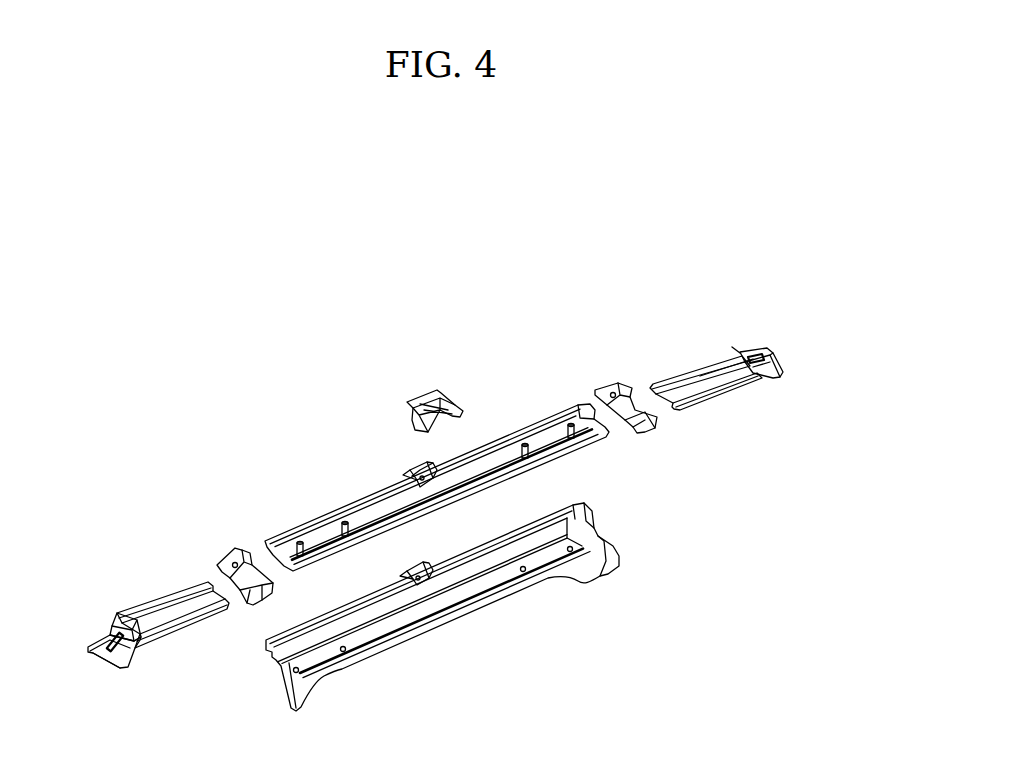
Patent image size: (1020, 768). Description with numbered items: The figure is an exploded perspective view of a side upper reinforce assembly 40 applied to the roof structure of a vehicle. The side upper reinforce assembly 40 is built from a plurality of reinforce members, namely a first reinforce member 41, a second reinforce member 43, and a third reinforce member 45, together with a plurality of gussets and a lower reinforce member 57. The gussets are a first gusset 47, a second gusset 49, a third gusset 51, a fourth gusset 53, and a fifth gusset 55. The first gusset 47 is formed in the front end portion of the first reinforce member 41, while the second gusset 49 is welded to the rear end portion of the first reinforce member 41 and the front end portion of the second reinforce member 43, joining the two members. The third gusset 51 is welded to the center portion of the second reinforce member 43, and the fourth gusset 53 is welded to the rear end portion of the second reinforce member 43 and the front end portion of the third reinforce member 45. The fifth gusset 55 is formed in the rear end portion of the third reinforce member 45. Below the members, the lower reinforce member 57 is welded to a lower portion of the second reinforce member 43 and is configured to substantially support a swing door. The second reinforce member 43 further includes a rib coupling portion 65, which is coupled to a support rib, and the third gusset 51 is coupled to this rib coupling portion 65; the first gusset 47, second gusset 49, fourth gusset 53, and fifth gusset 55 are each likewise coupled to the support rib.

The side upper reinforce assembly 40 is at (444, 256).
The first reinforce member 41 is at (172, 620).
The second reinforce member 43 is at (360, 517).
The third reinforce member 45 is at (696, 383).
The first gusset 47 is at (104, 615).
The second gusset 49 is at (218, 545).
The third gusset 51 is at (413, 380).
The fourth gusset 53 is at (590, 378).
The fifth gusset 55 is at (752, 339).
The lower reinforce member 57 is at (458, 600).
The rib coupling portion 65 is at (400, 467).